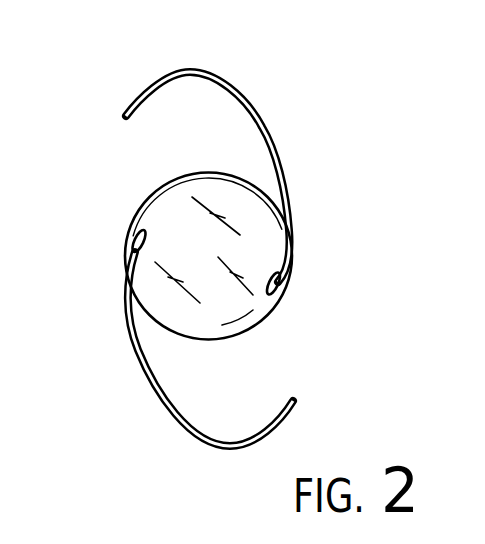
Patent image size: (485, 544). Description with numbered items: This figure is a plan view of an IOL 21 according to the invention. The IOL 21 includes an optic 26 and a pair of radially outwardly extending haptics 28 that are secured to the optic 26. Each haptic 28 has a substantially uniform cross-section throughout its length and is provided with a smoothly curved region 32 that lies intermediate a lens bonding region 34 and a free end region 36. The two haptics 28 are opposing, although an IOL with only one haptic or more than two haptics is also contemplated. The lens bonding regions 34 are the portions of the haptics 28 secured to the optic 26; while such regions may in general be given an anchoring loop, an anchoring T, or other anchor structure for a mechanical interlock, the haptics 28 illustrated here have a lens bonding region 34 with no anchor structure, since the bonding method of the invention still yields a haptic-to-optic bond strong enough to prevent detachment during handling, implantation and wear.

The IOL 21 is at (196, 229).
The optic 26 is at (201, 250).
The haptics 28 is at (231, 83).
The smoothly curved region 32 is at (195, 70).
The lens bonding region 34 is at (211, 258).
The free end region 36 is at (125, 112).